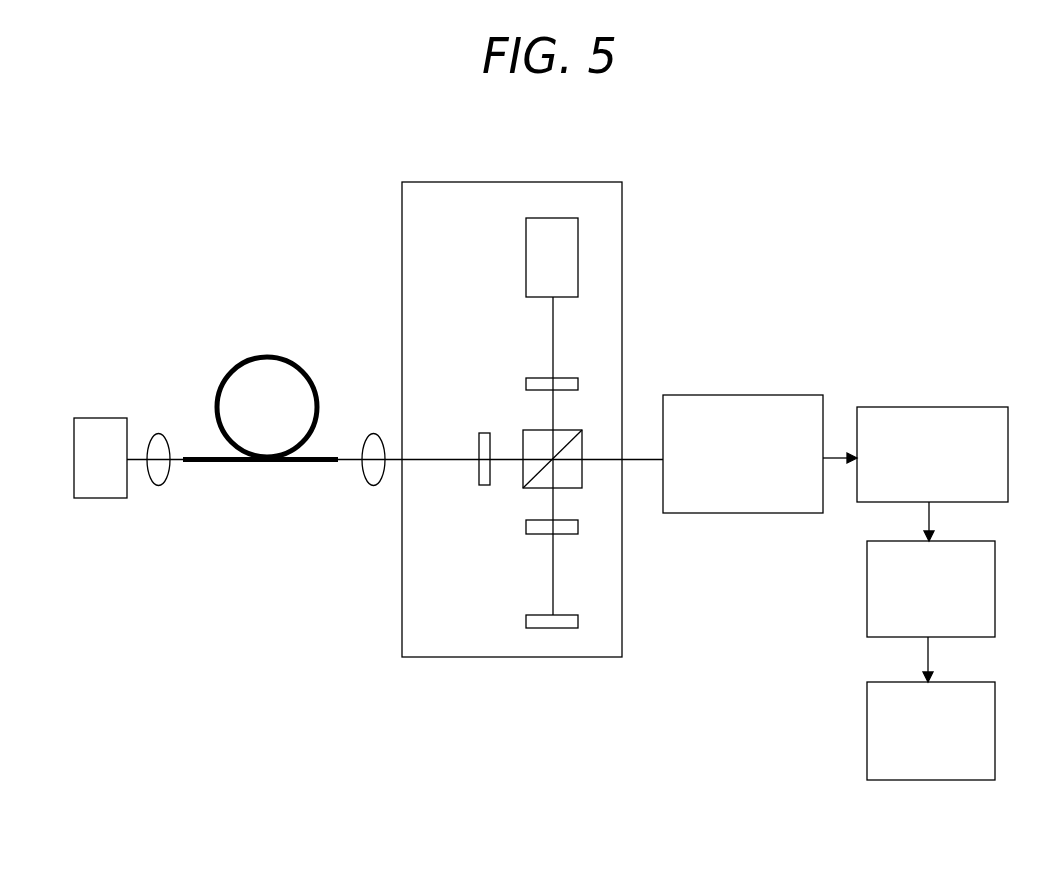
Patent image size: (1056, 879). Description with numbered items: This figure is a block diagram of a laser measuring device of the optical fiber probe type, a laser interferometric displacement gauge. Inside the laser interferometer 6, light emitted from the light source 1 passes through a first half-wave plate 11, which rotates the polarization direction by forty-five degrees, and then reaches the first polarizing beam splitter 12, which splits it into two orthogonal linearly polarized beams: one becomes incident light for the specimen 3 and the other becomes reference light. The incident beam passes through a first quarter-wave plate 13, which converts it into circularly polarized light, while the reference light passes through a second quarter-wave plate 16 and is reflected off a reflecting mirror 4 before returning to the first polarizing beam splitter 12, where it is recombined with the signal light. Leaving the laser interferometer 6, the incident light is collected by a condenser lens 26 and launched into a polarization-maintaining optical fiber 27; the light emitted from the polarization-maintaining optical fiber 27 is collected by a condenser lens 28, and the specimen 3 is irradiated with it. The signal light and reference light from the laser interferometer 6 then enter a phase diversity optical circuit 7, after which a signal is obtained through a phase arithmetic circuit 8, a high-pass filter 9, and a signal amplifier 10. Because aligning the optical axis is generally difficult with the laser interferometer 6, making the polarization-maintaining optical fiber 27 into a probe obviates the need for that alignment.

The light source 1 is at (536, 258).
The specimen 3 is at (95, 443).
The reflecting mirror 4 is at (545, 622).
The laser interferometer 6 is at (431, 192).
The phase diversity optical circuit 7 is at (763, 400).
The phase arithmetic circuit 8 is at (983, 415).
The high-pass filter 9 is at (985, 593).
The signal amplifier 10 is at (985, 745).
The first λ/2 plate 11 is at (542, 378).
The first polarizing beam splitter 12 is at (532, 442).
The first λ/4 plate 13 is at (485, 442).
The second λ/4 plate 16 is at (537, 527).
The condenser lens 26 is at (370, 435).
The polarization-maintaining optical fiber 27 is at (265, 348).
The condenser lens 28 is at (158, 433).